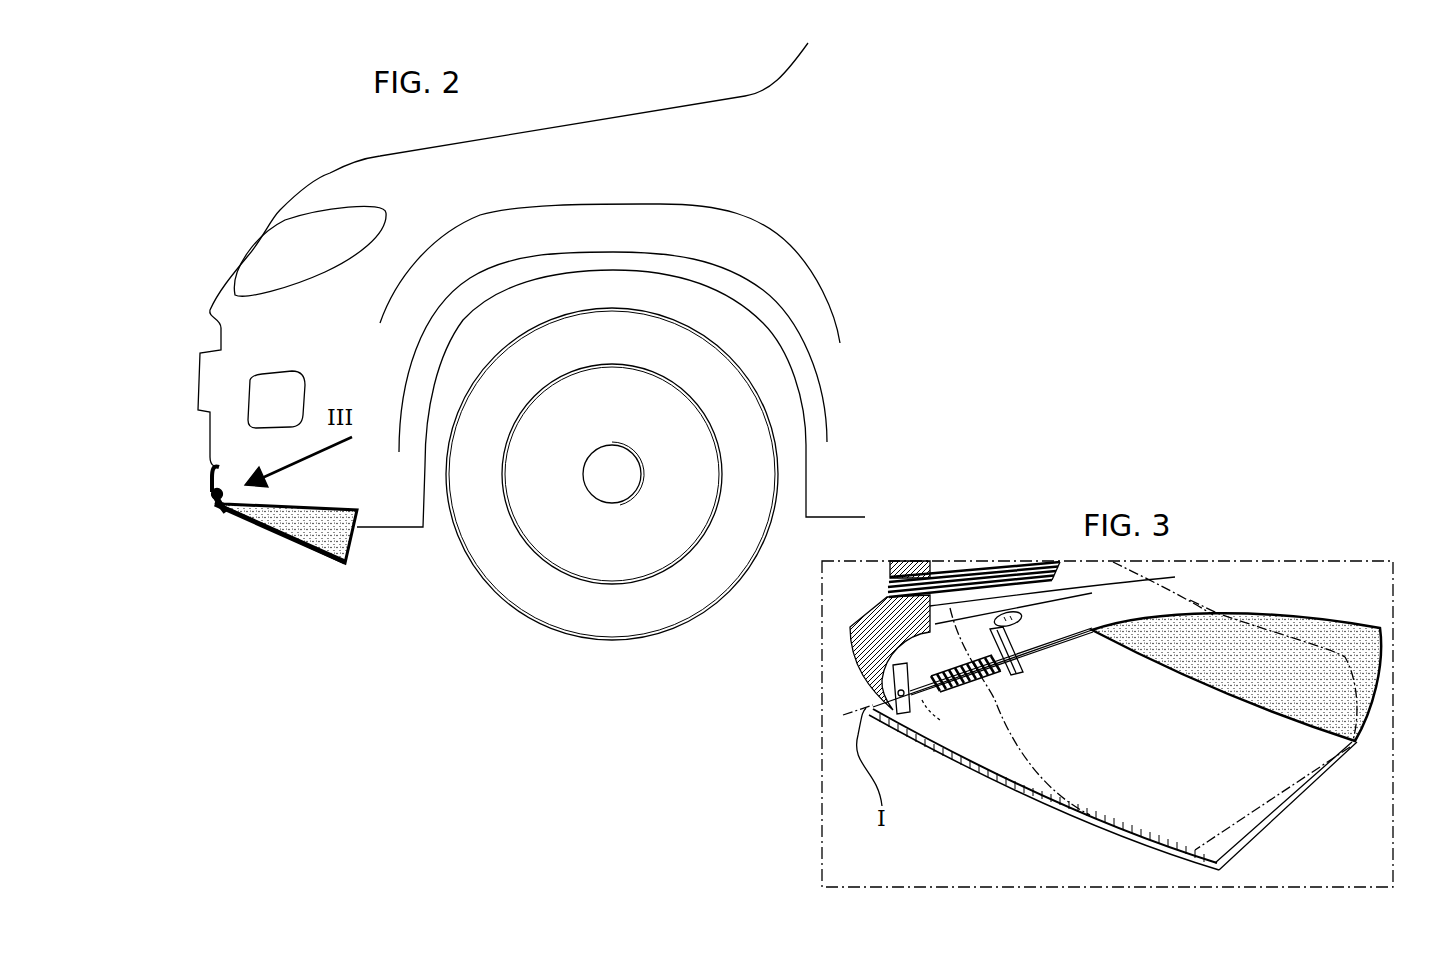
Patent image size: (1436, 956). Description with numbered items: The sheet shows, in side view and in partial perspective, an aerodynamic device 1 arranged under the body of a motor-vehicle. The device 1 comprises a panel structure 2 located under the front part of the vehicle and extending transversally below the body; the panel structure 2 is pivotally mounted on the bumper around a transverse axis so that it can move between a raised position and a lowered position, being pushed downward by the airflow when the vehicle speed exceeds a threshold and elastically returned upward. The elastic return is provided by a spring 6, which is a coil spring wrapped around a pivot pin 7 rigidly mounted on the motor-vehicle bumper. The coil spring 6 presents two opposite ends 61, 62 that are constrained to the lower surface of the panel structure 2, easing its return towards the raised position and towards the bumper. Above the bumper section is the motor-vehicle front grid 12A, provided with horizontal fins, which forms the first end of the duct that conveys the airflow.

In FIG. 2, the aerodynamic device 1 is at (288, 580).
In FIG. 3, the aerodynamic device 1 is at (1125, 682).
In FIG. 2, the panel structure 2 is at (337, 567).
In FIG. 3, the panel structure 2 is at (1073, 818).
In FIG. 2, the spring 6 is at (243, 548).
In FIG. 3, the spring 6 is at (972, 690).
In FIG. 2, the end of the coil spring 61 is at (242, 523).
In FIG. 3, the end of the coil spring 62 is at (992, 622).
In FIG. 3, the pivot pin 7 is at (917, 674).
In FIG. 3, the motor-vehicle front grid 12A is at (889, 578).